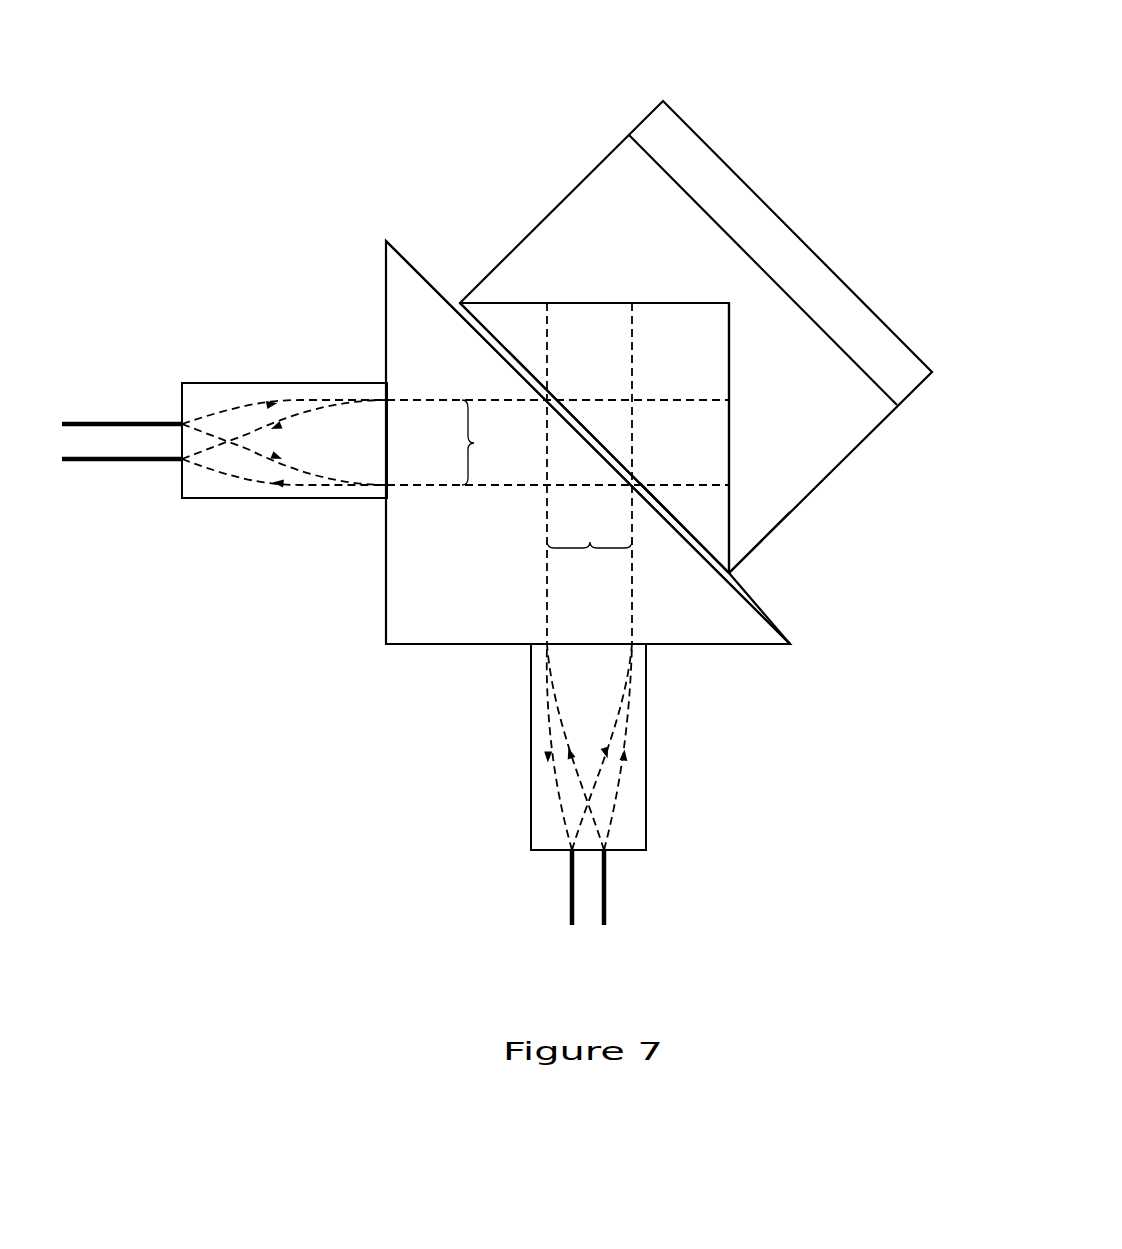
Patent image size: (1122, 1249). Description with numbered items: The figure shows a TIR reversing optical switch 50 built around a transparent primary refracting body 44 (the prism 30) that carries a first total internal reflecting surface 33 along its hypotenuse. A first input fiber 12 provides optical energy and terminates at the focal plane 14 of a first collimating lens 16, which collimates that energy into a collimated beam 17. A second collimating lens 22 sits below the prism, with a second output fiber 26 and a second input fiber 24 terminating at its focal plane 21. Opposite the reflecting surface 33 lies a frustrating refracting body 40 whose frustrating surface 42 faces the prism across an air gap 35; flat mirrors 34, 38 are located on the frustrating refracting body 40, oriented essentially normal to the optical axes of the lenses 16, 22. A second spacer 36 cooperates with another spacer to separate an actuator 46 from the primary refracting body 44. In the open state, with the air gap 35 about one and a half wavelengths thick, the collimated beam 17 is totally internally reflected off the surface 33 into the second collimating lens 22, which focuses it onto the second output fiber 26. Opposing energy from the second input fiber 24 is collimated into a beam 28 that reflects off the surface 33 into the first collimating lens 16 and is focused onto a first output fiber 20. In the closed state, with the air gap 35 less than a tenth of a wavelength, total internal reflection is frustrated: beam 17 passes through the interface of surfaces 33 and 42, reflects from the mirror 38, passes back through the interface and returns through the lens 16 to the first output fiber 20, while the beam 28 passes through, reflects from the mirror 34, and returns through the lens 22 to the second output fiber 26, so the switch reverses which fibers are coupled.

The first input fiber 12 is at (92, 420).
The focal plane 14 is at (182, 424).
The first collimating lens 16 is at (268, 377).
The collimated beam 17 is at (486, 442).
The first output fiber 20 is at (101, 455).
The focal plane 21 is at (550, 858).
The second collimating lens 22 is at (648, 764).
The second input fiber 24 is at (612, 911).
The second output fiber 26 is at (578, 913).
The collimated beam 28 is at (589, 562).
The primary refracting body 30 is at (385, 355).
The first total internal reflecting surface 33 is at (441, 297).
The mirror 34 is at (611, 303).
The air gap 35 is at (731, 578).
The second spacer 36 is at (828, 413).
The mirror 38 is at (730, 437).
The frustrating refracting body 40 is at (713, 517).
The frustrating surface 42 is at (707, 543).
The primary refracting body 44 is at (426, 623).
The actuator 46 is at (720, 192).
The TIR reversing optical switch 50 is at (752, 51).